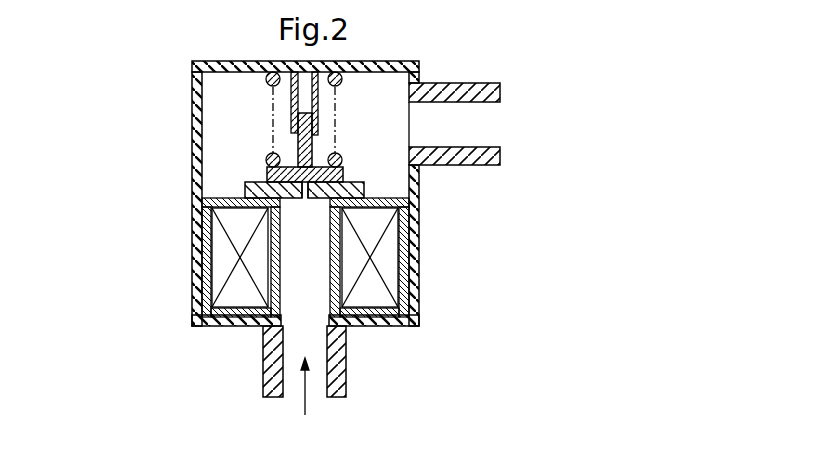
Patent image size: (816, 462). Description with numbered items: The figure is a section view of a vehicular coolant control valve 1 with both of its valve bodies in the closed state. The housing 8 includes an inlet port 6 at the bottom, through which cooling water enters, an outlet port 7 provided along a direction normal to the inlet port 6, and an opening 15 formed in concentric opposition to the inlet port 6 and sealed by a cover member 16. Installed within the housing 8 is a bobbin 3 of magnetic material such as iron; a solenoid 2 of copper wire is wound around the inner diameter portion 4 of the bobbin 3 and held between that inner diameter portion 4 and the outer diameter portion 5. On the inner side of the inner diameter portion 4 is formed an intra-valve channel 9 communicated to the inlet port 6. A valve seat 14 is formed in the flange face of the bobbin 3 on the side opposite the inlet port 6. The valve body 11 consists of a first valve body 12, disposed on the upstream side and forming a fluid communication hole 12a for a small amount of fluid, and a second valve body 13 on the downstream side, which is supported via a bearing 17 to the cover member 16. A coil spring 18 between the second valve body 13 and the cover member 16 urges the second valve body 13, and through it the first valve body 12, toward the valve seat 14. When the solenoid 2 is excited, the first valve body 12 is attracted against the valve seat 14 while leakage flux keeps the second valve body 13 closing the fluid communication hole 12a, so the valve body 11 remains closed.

The coolant control valve 1 is at (125, 82).
The solenoid 2 is at (392, 275).
The bobbin 3 is at (302, 280).
The inner diameter portion 4 is at (268, 270).
The outer diameter portion 5 is at (198, 282).
The inlet port 6 is at (290, 388).
The outlet port 7 is at (488, 126).
The housing 8 is at (192, 160).
The intra-valve channel 9 is at (317, 290).
The valve body 11 is at (467, 173).
The first valve body 12 is at (367, 190).
The fluid communication hole 12a is at (305, 200).
The second valve body 13 is at (347, 176).
The valve seat 14 is at (227, 197).
The opening 15 is at (235, 97).
The cover member 16 is at (419, 66).
The bearing 17 is at (293, 120).
The coil spring 18 is at (343, 77).